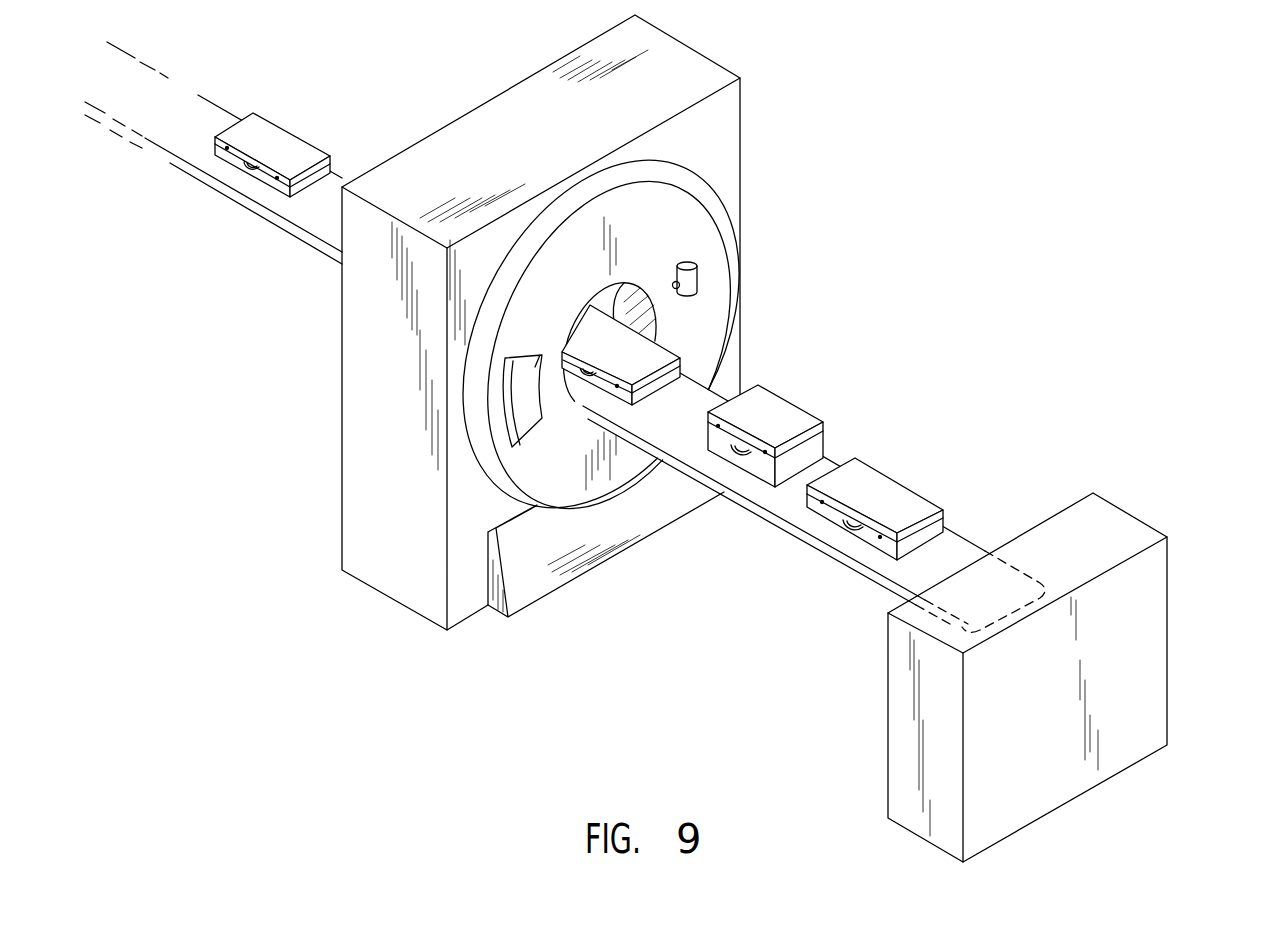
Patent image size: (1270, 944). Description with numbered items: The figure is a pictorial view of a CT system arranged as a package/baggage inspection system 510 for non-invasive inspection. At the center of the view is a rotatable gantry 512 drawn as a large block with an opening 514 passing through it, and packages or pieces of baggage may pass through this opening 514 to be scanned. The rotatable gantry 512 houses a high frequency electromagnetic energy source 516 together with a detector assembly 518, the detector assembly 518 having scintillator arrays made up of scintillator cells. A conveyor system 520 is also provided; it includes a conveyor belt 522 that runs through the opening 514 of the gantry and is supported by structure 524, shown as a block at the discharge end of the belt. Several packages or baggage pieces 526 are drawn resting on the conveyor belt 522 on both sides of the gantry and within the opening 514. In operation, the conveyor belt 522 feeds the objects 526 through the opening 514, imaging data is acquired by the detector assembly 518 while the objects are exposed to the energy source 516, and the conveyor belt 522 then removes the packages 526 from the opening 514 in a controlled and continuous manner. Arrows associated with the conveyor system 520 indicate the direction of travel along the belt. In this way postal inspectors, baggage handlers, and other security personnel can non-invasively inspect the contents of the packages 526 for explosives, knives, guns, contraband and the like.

The package/baggage inspection system 510 is at (903, 336).
The rotatable gantry 512 is at (681, 228).
The opening 514 is at (637, 282).
The high frequency electromagnetic energy source 516 is at (698, 284).
The detector assembly 518 is at (528, 368).
The conveyor system 520 is at (103, 152).
The conveyor belt 522 is at (312, 215).
The structure 524 is at (1152, 632).
The packages or baggage pieces 526 is at (283, 141).